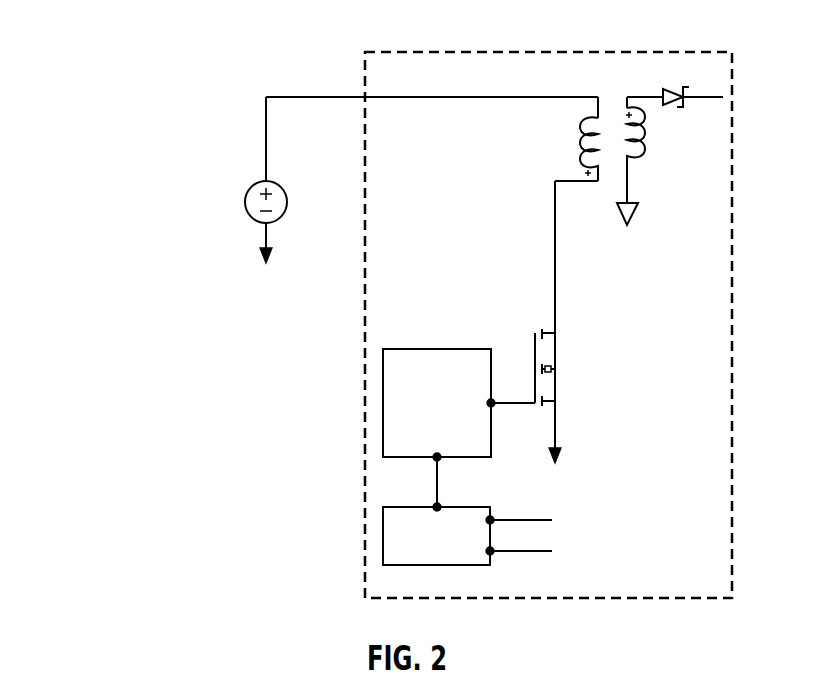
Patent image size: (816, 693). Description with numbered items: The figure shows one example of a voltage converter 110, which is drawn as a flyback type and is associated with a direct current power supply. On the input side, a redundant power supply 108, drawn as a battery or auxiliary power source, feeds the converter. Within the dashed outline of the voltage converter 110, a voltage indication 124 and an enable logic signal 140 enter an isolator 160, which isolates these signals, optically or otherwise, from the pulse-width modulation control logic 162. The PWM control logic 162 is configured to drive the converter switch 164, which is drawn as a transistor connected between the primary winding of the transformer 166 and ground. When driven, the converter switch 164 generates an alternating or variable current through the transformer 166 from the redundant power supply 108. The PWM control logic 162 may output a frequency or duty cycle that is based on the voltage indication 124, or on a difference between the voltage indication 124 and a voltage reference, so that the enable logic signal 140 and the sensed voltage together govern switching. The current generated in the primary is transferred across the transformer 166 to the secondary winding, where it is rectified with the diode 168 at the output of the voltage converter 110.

The redundant power supply 108 is at (272, 217).
The voltage converter 110 is at (612, 42).
The voltage indication 124 is at (515, 520).
The enable logic signal 140 is at (517, 551).
The isolator 160 is at (452, 507).
The pulse-width modulation control logic 162 is at (450, 349).
The converter switch 164 is at (557, 388).
The transformer 166 is at (642, 177).
The diode 168 is at (668, 108).